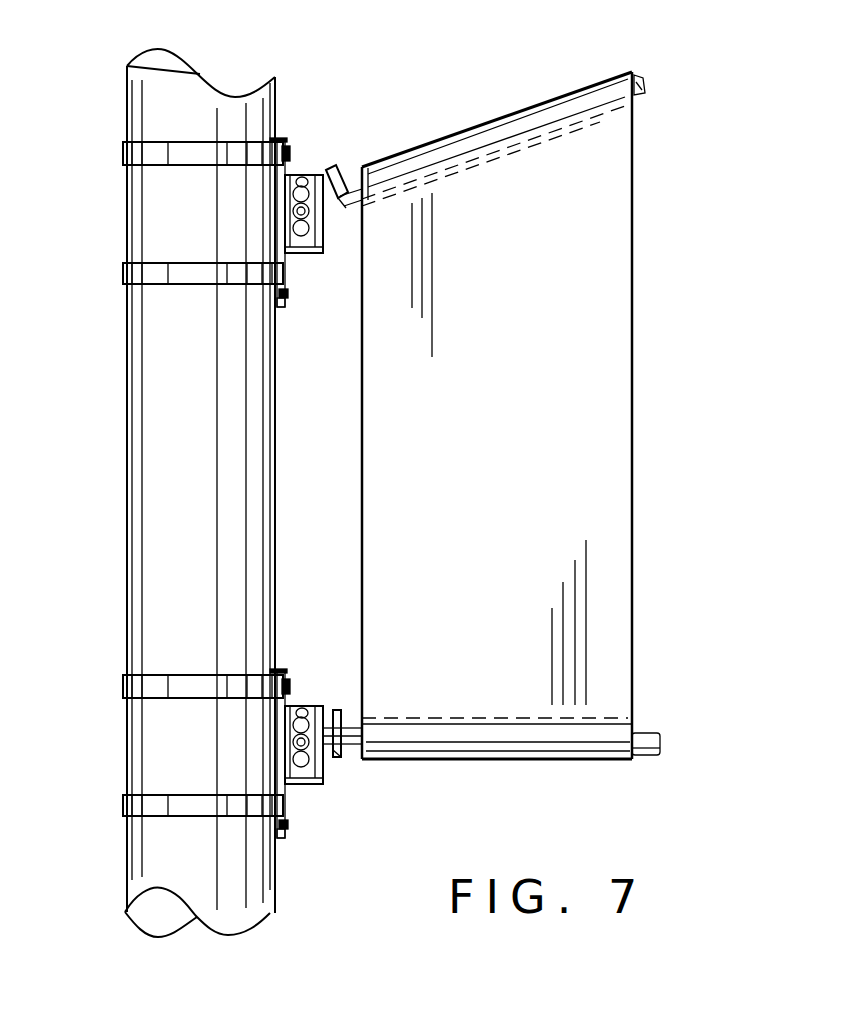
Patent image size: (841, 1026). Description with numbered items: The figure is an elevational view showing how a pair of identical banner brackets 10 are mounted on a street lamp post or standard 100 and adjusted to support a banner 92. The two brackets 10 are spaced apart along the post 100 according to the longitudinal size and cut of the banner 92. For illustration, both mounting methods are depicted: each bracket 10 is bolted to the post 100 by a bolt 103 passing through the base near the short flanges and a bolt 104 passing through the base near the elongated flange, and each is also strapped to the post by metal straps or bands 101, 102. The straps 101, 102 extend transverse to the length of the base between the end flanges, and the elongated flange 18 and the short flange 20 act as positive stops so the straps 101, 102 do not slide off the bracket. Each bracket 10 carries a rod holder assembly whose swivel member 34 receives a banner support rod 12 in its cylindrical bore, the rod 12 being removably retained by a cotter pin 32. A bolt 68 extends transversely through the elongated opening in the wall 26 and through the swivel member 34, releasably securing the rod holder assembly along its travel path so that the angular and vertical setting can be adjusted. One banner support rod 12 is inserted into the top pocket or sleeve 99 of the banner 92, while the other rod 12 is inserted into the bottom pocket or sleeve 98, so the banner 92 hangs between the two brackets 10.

The banner bracket 10 is at (539, 426).
The banner support rod 12 is at (645, 92).
The elongated flange 18 is at (283, 302).
The short flange 20 is at (283, 139).
The wall 26 is at (313, 250).
The cotter pin 32 is at (337, 168).
The swivel member 34 is at (340, 205).
The bolt 68 is at (300, 180).
The banner 92 is at (510, 446).
The bottom pocket or sleeve 98 is at (632, 757).
The top pocket or sleeve 99 is at (635, 73).
The post or standard 100 is at (170, 398).
The metal strap or band 101 is at (155, 155).
The metal strap or band 102 is at (175, 272).
The bolt 103 is at (288, 152).
The bolt 104 is at (287, 297).